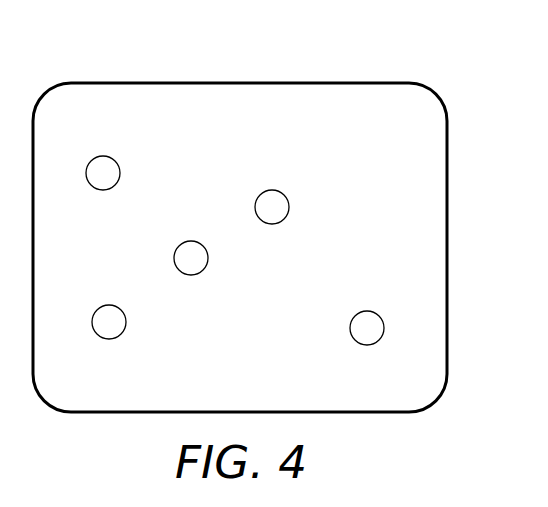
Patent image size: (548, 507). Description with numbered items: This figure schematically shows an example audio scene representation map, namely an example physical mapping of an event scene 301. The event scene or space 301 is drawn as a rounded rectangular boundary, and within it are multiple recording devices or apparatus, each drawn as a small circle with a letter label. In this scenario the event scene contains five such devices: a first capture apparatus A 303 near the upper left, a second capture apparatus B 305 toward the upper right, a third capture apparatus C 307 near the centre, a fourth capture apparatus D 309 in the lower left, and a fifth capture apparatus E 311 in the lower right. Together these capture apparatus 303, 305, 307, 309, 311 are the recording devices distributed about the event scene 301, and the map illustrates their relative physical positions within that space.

The event scene 301 is at (242, 57).
The first capture apparatus A 303 is at (120, 173).
The second capture apparatus B 305 is at (289, 207).
The third capture apparatus C 307 is at (208, 258).
The fourth capture apparatus D 309 is at (126, 322).
The fifth capture apparatus E 311 is at (350, 328).